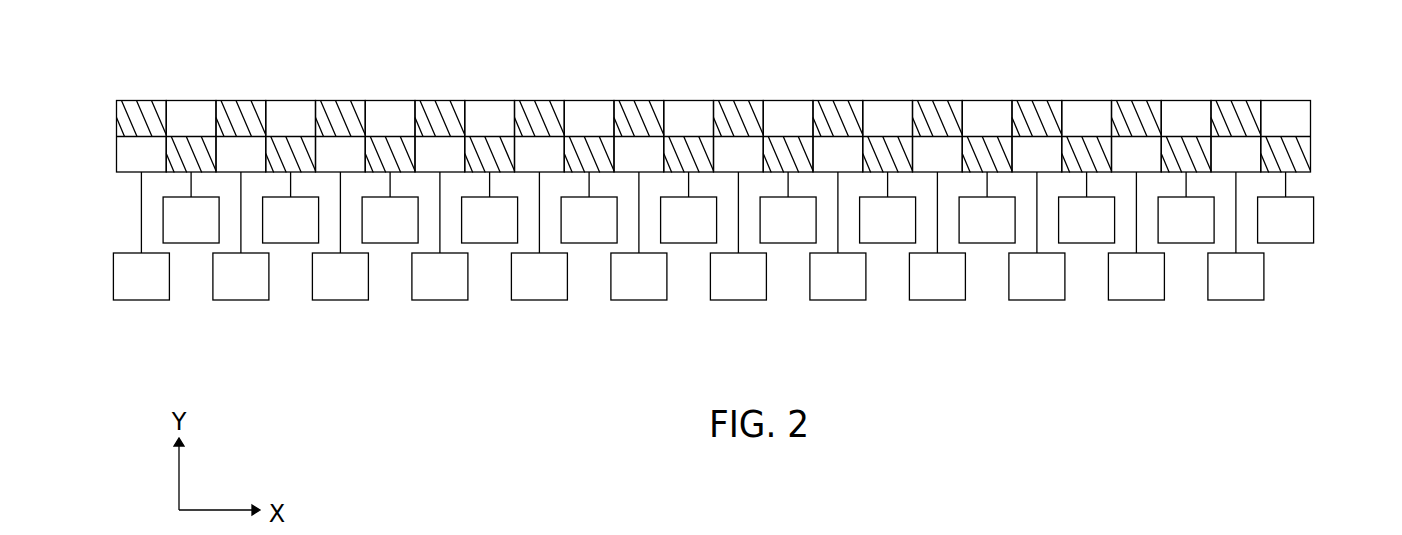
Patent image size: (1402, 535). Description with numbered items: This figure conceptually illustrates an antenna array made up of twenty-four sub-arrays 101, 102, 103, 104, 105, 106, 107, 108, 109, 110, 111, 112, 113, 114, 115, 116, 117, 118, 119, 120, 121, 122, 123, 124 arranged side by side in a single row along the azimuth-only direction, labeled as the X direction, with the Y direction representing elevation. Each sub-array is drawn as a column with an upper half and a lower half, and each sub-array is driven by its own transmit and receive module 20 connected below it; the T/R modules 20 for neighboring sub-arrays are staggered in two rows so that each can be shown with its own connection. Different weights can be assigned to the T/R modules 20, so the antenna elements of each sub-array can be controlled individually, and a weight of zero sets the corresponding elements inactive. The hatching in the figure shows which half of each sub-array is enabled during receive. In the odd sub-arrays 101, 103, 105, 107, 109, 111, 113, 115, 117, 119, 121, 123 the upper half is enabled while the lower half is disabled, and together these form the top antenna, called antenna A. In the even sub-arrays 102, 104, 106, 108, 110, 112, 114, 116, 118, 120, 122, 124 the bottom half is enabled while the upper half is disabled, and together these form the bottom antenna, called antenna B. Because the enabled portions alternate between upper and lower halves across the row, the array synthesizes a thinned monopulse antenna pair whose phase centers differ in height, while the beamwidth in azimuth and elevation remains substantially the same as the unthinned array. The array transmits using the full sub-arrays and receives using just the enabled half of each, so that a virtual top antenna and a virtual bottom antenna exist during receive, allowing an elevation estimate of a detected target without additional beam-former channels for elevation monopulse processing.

The transmit and receive (T/R) module 20 is at (141, 300).
The sub-array 101 is at (142, 121).
The sub-array 102 is at (191, 121).
The sub-array 103 is at (241, 121).
The sub-array 104 is at (291, 121).
The sub-array 105 is at (341, 121).
The sub-array 106 is at (390, 121).
The sub-array 107 is at (440, 121).
The sub-array 108 is at (490, 121).
The sub-array 109 is at (540, 121).
The sub-array 110 is at (589, 121).
The sub-array 111 is at (639, 121).
The sub-array 112 is at (689, 121).
The sub-array 113 is at (739, 121).
The sub-array 114 is at (788, 121).
The sub-array 115 is at (838, 121).
The sub-array 116 is at (888, 121).
The sub-array 117 is at (938, 121).
The sub-array 118 is at (987, 121).
The sub-array 119 is at (1037, 121).
The sub-array 120 is at (1087, 121).
The sub-array 121 is at (1137, 121).
The sub-array 122 is at (1186, 121).
The sub-array 123 is at (1236, 121).
The sub-array 124 is at (1286, 121).